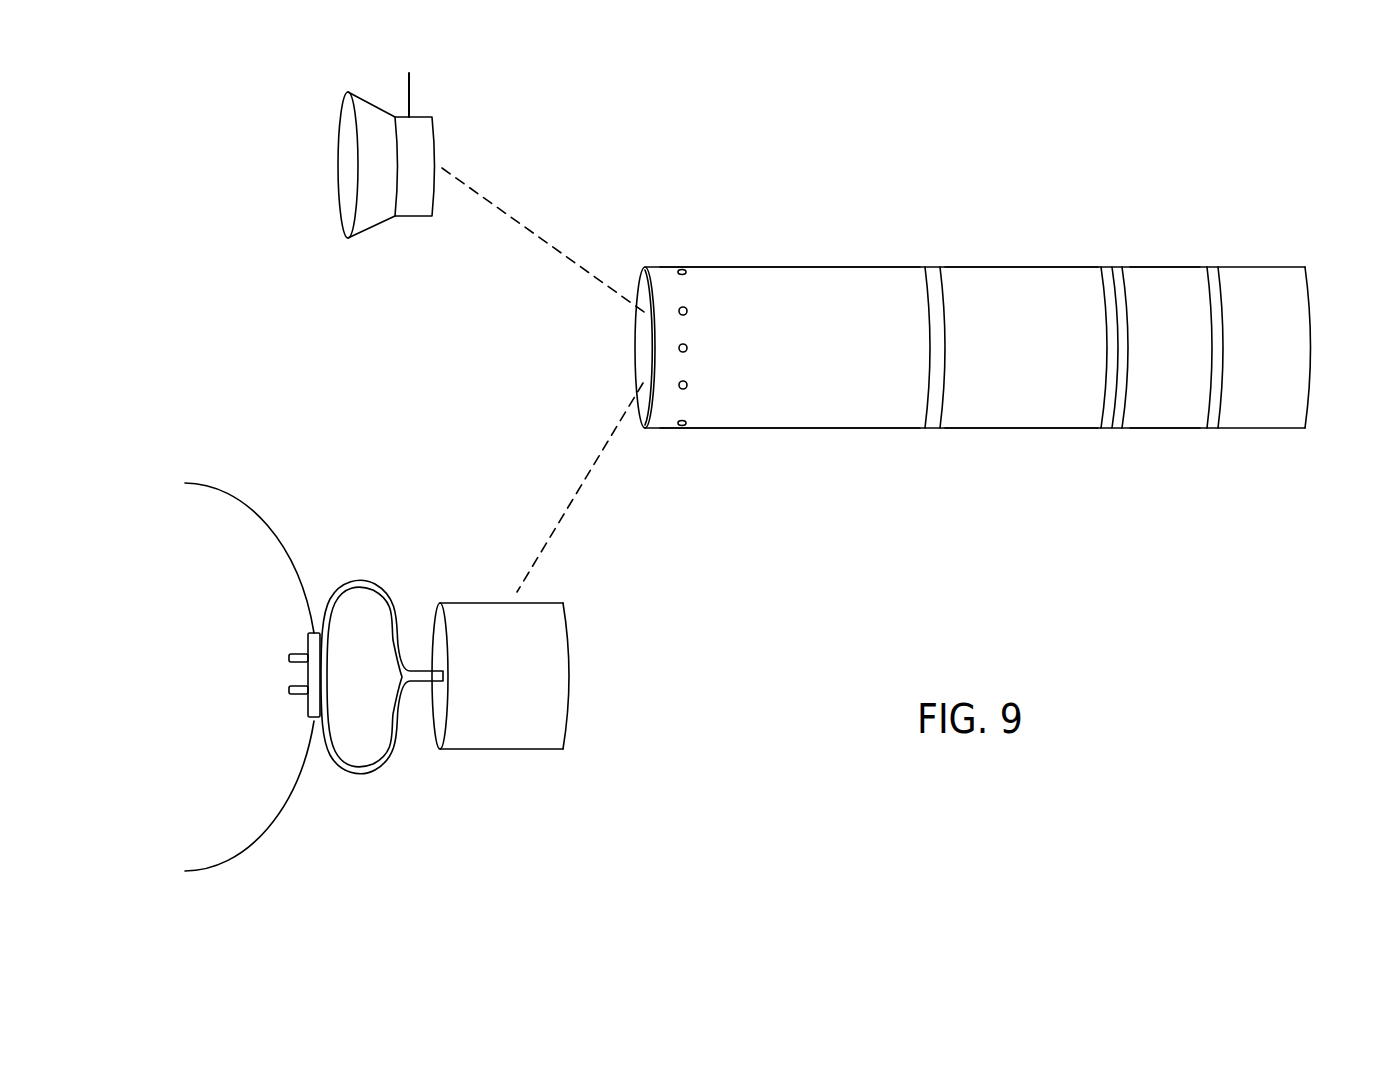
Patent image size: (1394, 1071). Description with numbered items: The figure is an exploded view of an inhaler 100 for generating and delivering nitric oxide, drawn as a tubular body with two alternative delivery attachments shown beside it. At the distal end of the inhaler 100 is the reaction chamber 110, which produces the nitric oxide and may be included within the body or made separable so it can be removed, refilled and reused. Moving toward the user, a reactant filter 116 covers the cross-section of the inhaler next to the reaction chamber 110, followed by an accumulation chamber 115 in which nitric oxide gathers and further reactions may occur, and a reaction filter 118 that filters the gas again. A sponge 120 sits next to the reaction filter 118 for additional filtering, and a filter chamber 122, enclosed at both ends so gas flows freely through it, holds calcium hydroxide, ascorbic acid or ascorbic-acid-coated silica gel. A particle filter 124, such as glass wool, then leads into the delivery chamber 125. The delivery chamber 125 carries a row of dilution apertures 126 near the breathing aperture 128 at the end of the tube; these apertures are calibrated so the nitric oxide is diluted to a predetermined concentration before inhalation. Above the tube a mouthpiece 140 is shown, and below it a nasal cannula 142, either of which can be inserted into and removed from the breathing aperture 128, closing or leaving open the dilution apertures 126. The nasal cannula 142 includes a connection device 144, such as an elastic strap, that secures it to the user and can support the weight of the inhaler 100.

The inhaler 100 is at (1240, 150).
The reaction chamber 110 is at (1297, 313).
The accumulation chamber 115 is at (1162, 417).
The reactant filter 116 is at (1212, 270).
The reaction filter 118 is at (1113, 270).
The sponge 120 is at (1103, 270).
The filter chamber 122 is at (1017, 287).
The particle filter 124 is at (930, 268).
The delivery chamber 125 is at (802, 416).
The dilution apertures 126 is at (682, 266).
The breathing aperture 128 is at (647, 348).
The mouthpiece 140 is at (412, 88).
The nasal cannula 142 is at (556, 668).
The connection device 144 is at (262, 513).